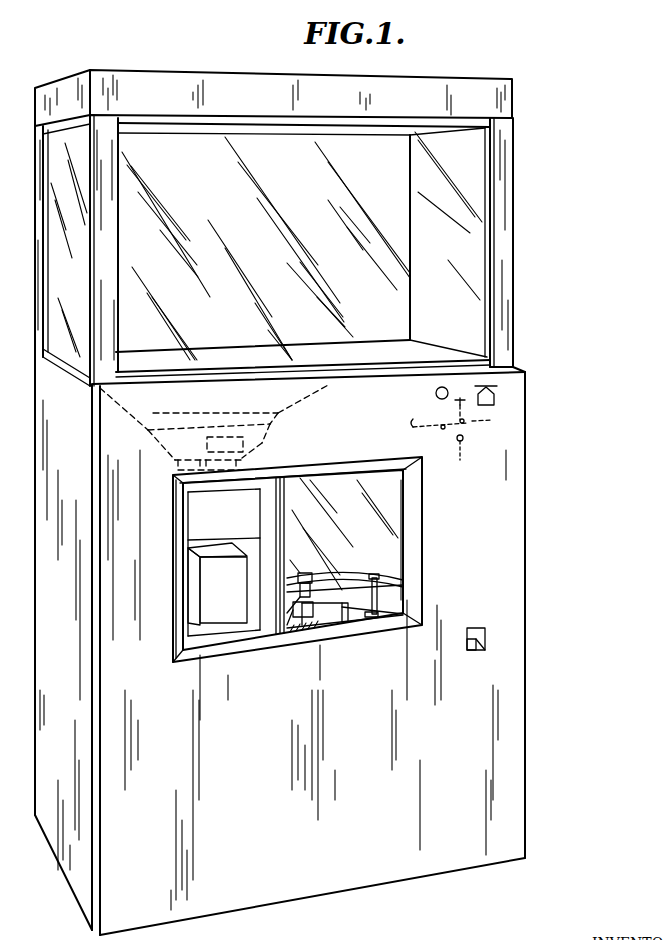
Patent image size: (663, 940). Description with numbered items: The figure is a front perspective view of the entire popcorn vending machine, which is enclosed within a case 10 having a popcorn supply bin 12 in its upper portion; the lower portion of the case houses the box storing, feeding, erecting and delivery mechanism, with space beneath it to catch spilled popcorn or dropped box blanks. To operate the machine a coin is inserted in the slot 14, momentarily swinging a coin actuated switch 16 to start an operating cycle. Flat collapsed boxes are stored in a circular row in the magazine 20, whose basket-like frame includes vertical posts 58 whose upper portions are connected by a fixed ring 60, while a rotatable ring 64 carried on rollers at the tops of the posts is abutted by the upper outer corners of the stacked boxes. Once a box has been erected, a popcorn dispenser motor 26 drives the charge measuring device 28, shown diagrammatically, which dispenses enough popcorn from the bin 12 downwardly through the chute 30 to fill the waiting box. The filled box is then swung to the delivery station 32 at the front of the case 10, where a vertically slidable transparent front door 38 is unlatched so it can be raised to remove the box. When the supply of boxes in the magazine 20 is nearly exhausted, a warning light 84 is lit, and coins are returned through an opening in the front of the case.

The case 10 is at (542, 708).
The popcorn supply bin 12 is at (468, 313).
The slot 14 is at (497, 393).
The coin actuated switch 16 is at (458, 463).
The magazine 20 is at (354, 573).
The popcorn dispenser motor 26 is at (264, 442).
The charge measuring device 28 is at (148, 432).
The chute 30 is at (284, 559).
The delivery station 32 is at (242, 630).
The transparent front door 38 is at (193, 535).
The vertical posts 58 is at (381, 597).
The fixed ring 60 is at (356, 605).
The rotatable ring 64 is at (378, 578).
The warning light 84 is at (451, 408).